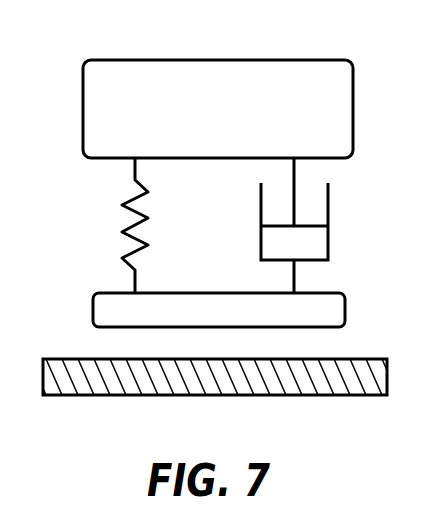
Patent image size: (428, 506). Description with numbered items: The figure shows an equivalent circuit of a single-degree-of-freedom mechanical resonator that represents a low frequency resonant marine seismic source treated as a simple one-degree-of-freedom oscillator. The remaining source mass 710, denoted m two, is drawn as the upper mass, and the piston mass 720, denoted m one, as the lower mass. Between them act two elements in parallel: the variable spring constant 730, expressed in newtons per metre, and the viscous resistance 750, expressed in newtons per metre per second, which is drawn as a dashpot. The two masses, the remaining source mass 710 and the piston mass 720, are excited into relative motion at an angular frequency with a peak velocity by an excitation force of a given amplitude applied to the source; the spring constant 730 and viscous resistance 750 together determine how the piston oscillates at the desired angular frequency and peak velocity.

The remaining source mass 710 is at (214, 208).
The piston mass 720 is at (95, 293).
The variable spring constant 730 is at (122, 233).
The viscous resistance 750 is at (329, 242).